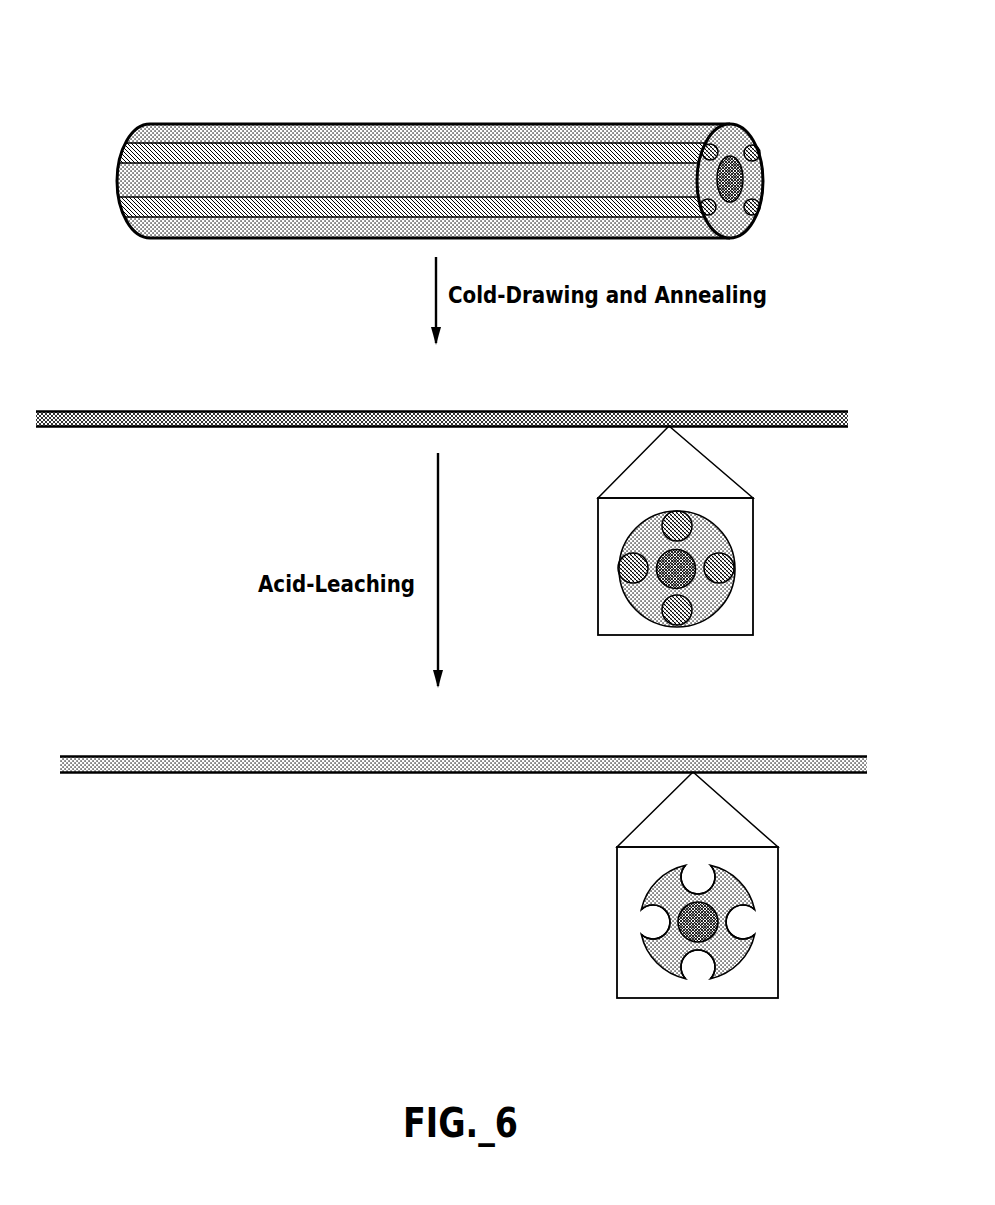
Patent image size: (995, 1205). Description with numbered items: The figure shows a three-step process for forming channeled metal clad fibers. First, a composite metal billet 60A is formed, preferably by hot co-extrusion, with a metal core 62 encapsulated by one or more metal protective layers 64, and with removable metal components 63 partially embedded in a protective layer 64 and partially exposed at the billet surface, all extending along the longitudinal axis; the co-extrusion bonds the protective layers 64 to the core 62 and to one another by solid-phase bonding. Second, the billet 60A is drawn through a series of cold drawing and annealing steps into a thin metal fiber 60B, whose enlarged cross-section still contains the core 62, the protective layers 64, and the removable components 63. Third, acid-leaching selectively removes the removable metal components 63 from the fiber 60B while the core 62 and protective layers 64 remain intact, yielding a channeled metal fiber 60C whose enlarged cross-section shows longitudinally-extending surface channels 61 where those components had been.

The composite metal billet 60A is at (160, 96).
The metal fiber 60B is at (148, 403).
The channeled metal fiber 60C is at (170, 749).
The surface channels 61 is at (657, 928).
The metal core 62 is at (728, 177).
The removable metal components 63 is at (415, 155).
The metal protective layers 64 is at (728, 140).